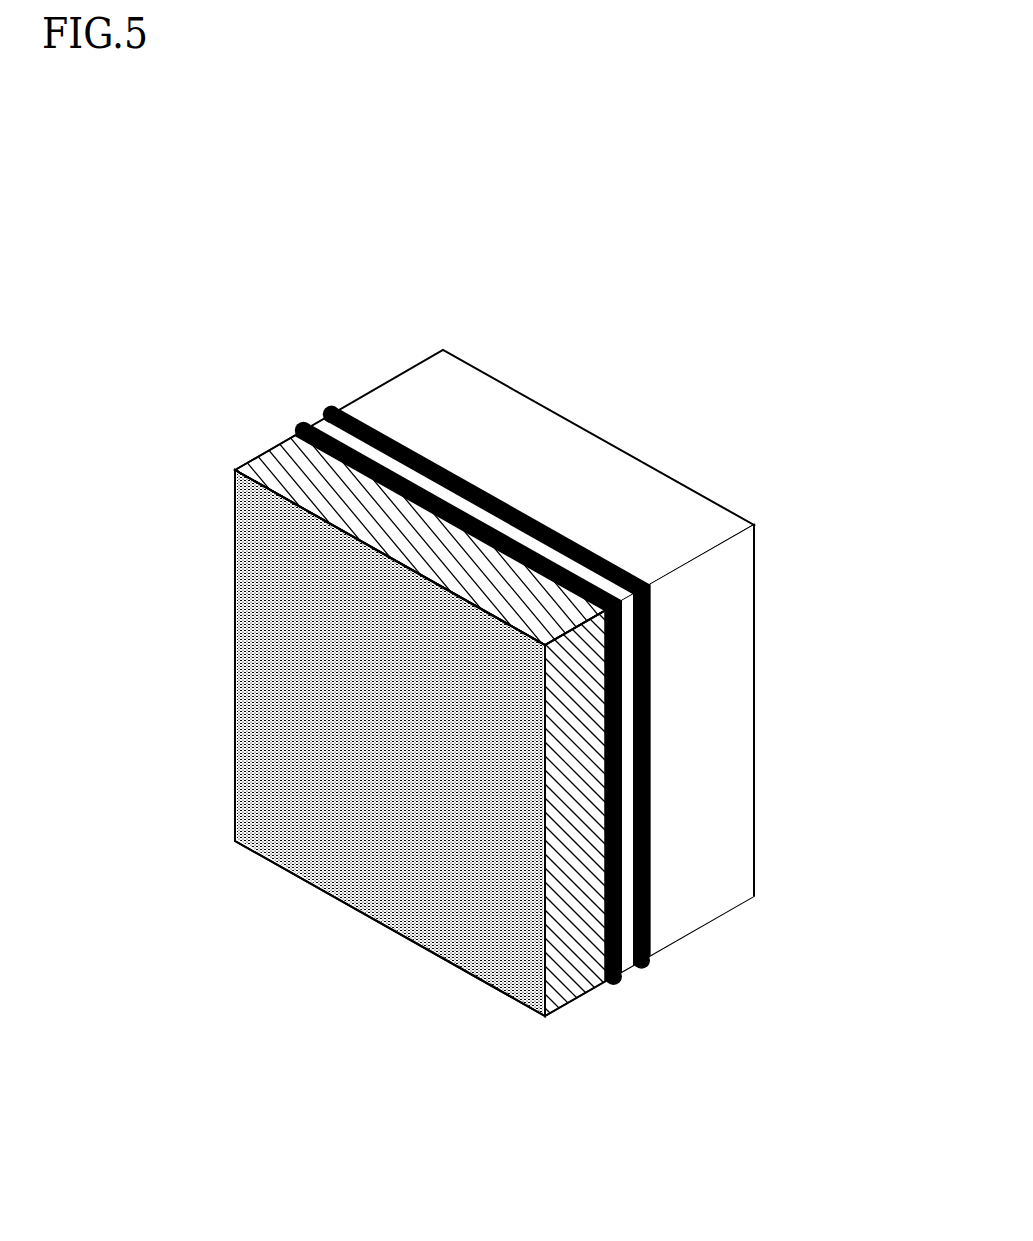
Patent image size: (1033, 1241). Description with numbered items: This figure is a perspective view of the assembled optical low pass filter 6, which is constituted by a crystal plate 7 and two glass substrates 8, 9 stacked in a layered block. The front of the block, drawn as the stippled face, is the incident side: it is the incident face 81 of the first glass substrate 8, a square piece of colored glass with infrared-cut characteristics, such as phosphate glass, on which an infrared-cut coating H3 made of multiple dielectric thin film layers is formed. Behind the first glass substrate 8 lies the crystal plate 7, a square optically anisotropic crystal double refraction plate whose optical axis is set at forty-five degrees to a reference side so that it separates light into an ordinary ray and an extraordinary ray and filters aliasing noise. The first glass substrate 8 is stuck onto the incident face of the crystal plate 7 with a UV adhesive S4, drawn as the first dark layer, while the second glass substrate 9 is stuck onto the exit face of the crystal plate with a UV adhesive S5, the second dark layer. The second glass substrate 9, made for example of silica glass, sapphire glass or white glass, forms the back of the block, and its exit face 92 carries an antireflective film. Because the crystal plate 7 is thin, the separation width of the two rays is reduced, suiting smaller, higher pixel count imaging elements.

The optical low pass filter 6 is at (802, 519).
The crystal plate 7 is at (628, 932).
The first glass substrate 8 is at (568, 963).
The incident face 81 is at (255, 678).
The second glass substrate 9 is at (738, 828).
The exit face 92 is at (754, 737).
The UV adhesive S4 is at (298, 427).
The UV adhesive S5 is at (355, 418).
The infrared-cut coating H3 is at (337, 838).